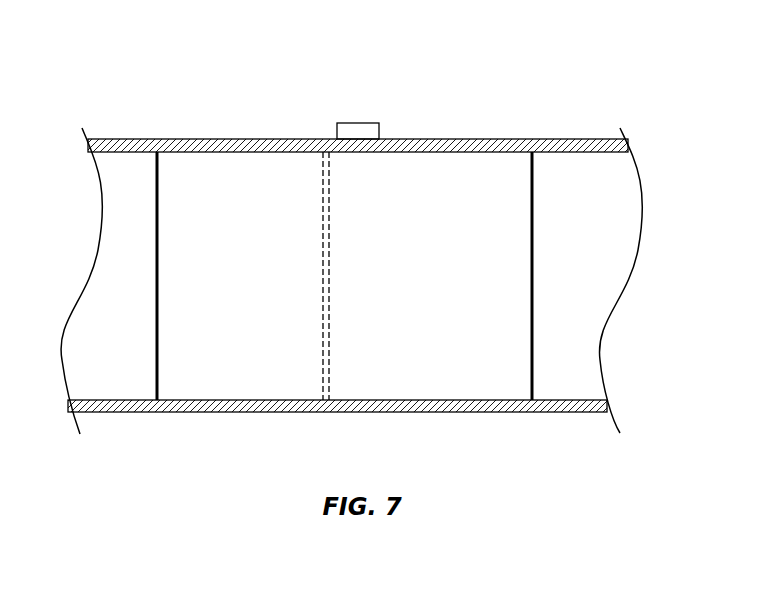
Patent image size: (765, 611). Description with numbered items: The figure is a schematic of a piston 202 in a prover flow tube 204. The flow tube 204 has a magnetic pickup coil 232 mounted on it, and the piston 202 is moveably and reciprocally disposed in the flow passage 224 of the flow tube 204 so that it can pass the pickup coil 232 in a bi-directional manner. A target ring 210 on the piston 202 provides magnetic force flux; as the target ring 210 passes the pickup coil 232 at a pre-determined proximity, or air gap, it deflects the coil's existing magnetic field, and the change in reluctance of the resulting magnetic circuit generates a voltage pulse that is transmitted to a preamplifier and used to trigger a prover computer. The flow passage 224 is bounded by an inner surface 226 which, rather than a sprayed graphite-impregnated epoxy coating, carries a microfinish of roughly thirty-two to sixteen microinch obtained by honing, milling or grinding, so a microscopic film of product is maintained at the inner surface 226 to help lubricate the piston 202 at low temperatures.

The piston 202 is at (431, 183).
The flow tube 204 is at (143, 138).
The target ring 210 is at (322, 222).
The flow passage 224 is at (133, 337).
The inner surface 226 is at (599, 400).
The magnetic pickup coil 232 is at (342, 123).